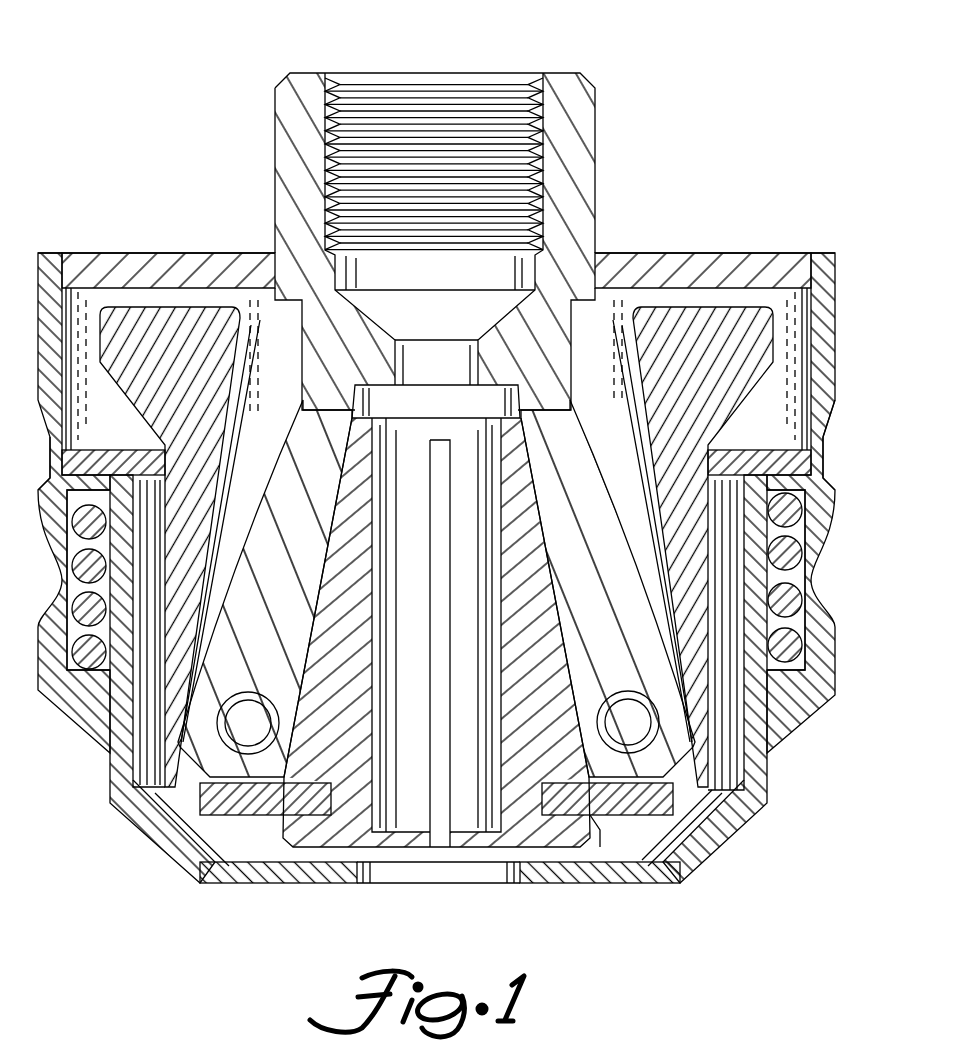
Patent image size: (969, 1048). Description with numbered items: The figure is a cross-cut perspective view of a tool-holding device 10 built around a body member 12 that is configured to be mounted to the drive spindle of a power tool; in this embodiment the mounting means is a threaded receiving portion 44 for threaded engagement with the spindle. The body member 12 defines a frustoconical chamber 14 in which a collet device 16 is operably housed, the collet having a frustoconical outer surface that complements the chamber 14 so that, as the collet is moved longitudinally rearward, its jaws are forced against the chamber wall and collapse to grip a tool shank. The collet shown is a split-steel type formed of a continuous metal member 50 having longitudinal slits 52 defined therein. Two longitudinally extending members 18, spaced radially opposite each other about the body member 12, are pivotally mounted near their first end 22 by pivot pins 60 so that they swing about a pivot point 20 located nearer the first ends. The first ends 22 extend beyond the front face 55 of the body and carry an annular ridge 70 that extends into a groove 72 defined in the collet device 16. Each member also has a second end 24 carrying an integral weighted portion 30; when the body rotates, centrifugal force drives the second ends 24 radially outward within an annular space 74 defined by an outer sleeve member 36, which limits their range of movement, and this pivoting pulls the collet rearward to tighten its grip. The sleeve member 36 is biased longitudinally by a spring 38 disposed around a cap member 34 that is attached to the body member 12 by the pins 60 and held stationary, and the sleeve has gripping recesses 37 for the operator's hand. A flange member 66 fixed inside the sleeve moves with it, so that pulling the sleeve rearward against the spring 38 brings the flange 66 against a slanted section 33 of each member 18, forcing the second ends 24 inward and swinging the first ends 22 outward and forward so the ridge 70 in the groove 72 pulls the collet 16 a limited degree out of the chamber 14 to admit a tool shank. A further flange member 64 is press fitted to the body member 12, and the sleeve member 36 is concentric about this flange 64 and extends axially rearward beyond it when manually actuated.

The device 10 is at (642, 70).
The body member 12 is at (597, 168).
The frustoconical chamber 14 is at (370, 392).
The collet device 16 is at (318, 834).
The longitudinally extending members 18 is at (165, 540).
The pivot point 20 is at (240, 692).
The first end 22 is at (200, 850).
The second end 24 is at (110, 358).
The weighted portion 30 is at (758, 340).
The slanted section 33 is at (135, 437).
The cap member 34 is at (724, 832).
The outer sleeve member 36 is at (836, 353).
The gripping recesses 37 is at (836, 426).
The spring 38 is at (790, 606).
The threaded receiving portion 44 is at (462, 70).
The continuous metal member 50 is at (462, 836).
The longitudinal slits 52 is at (426, 836).
The front face 55 is at (280, 814).
The pivot pins 60 is at (636, 692).
The flange member 64 is at (730, 253).
The flange member 66 is at (75, 466).
The annular ridge 70 is at (608, 816).
The groove 72 is at (552, 783).
The annular space 74 is at (108, 232).